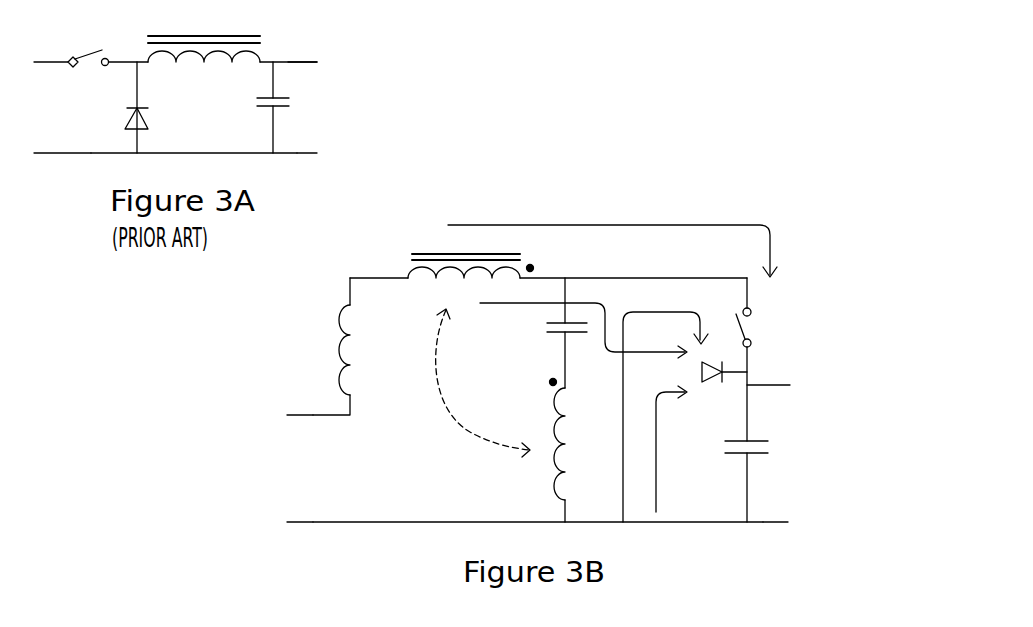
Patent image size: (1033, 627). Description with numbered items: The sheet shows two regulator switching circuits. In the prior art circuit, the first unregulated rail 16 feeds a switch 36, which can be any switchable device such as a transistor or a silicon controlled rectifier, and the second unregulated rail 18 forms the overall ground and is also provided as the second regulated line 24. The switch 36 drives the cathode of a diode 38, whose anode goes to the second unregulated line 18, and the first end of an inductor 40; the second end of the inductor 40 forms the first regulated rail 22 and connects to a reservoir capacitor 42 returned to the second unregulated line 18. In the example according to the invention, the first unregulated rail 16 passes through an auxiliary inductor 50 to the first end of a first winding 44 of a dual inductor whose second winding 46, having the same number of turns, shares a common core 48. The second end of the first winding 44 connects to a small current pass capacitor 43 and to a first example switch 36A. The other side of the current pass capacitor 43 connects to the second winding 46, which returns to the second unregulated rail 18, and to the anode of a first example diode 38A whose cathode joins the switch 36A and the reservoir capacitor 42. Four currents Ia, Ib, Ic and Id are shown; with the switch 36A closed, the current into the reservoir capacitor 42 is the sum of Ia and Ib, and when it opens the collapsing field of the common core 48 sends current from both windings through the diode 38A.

In FIG. 3A, the first unregulated rail 16 is at (47, 62).
In FIG. 3B, the first unregulated rail 16 is at (313, 415).
In FIG. 3A, the second unregulated rail 18 is at (91, 153).
In FIG. 3B, the second unregulated rail 18 is at (313, 522).
In FIG. 3A, the first regulated rail 22 is at (288, 62).
In FIG. 3B, the first regulated rail 22 is at (770, 386).
In FIG. 3A, the second regulated line 24 is at (297, 153).
In FIG. 3B, the second regulated line 24 is at (763, 523).
In FIG. 3A, the switch 36 is at (91, 70).
In FIG. 3A, the diode 38 is at (143, 118).
In FIG. 3A, the inductor 40 is at (203, 63).
In FIG. 3A, the reservoir capacitor 42 is at (263, 108).
In FIG. 3B, the reservoir capacitor 42 is at (755, 455).
In FIG. 3B, the current pass capacitor 43 is at (553, 335).
In FIG. 3B, the first winding 44 is at (442, 279).
In FIG. 3B, the second winding 46 is at (550, 474).
In FIG. 3B, the common core 48 is at (527, 257).
In FIG. 3B, the auxiliary inductor 50 is at (338, 356).
In FIG. 3B, the first example switch 36A is at (751, 326).
In FIG. 3B, the first example diode 38A is at (706, 384).
In FIG. 3B, the current Ia is at (647, 227).
In FIG. 3B, the current Ib is at (672, 315).
In FIG. 3B, the current Ic is at (663, 478).
In FIG. 3B, the current Id is at (502, 304).